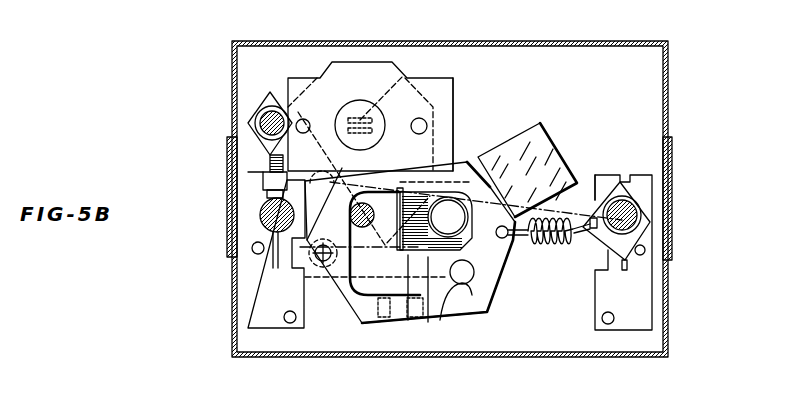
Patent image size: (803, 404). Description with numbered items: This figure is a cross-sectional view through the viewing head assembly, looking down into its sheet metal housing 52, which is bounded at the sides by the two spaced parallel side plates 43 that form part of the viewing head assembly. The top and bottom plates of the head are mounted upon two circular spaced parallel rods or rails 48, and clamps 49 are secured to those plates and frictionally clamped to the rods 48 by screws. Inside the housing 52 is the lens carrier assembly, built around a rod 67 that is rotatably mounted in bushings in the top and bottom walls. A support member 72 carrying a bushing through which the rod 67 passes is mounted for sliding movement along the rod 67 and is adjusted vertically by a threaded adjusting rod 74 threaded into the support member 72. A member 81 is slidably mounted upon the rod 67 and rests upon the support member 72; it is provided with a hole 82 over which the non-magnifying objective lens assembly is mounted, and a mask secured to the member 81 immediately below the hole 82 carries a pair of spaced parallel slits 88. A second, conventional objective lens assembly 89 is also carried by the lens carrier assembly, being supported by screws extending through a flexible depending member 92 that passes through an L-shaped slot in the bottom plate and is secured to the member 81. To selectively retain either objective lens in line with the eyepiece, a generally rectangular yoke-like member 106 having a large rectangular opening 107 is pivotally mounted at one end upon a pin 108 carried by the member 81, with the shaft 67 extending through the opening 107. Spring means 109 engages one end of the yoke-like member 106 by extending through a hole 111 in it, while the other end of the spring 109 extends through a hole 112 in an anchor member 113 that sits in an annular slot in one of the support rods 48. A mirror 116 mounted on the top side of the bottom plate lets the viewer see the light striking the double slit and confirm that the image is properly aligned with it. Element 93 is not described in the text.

The side plates 43 is at (228, 150).
The rods or rails 48 is at (260, 218).
The clamps 49 is at (257, 292).
The sheet metal housing 52 is at (653, 42).
The rod 67 is at (365, 205).
The support member 72 is at (282, 100).
The threaded adjusting rod 74 is at (257, 122).
The member 81 is at (363, 65).
The hole 82 is at (453, 87).
The slits 88 is at (405, 77).
The objective lens assembly 89 is at (428, 290).
The flexible depending member 92 is at (360, 310).
The latch plate 93 is at (485, 275).
The yoke-like member 106 is at (470, 300).
The rectangular opening 107 is at (455, 307).
The pin 108 is at (338, 290).
The spring means 109 is at (555, 244).
The hole 111 is at (510, 240).
The hole 112 is at (602, 187).
The anchor member 113 is at (623, 197).
The mirror 116 is at (540, 123).